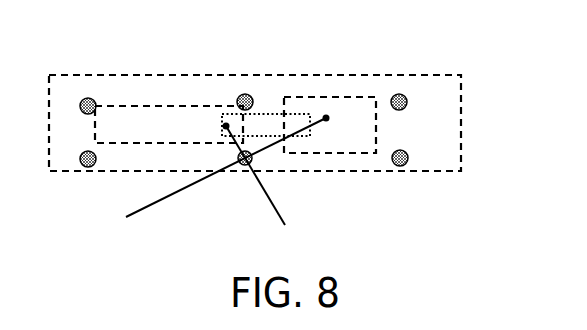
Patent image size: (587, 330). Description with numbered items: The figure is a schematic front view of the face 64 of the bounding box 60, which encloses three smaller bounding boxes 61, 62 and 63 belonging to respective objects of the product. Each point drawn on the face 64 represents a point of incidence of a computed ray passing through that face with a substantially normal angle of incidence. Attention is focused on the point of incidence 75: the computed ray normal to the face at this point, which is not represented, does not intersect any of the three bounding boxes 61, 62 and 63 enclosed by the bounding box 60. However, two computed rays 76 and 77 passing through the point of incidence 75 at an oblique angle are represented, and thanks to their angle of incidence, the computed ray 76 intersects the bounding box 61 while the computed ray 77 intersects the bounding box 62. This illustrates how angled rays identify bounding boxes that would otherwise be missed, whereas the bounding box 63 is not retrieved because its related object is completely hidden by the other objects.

The bounding box 60 is at (368, 75).
The bounding box 61 is at (140, 106).
The bounding box 62 is at (320, 96).
The bounding box 63 is at (226, 113).
The face 64 is at (437, 163).
The point of incidence 75 is at (244, 167).
The computed ray 76 is at (277, 208).
The computed ray 77 is at (175, 192).